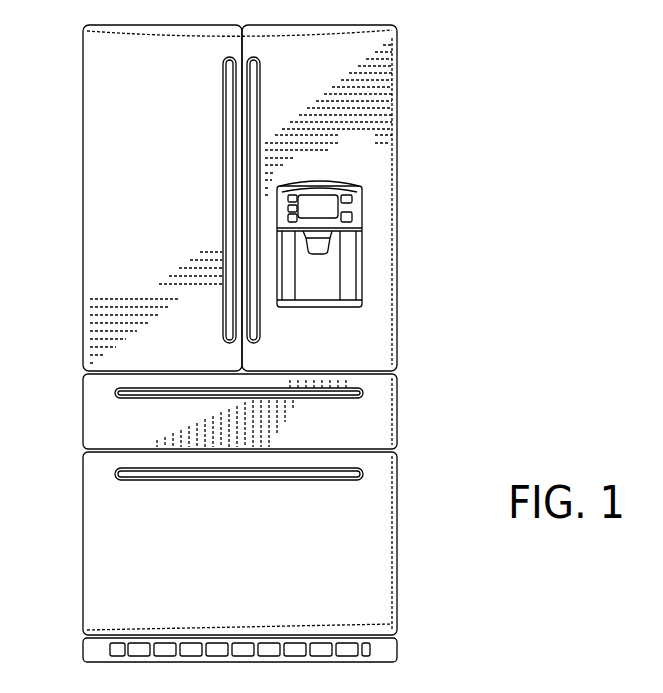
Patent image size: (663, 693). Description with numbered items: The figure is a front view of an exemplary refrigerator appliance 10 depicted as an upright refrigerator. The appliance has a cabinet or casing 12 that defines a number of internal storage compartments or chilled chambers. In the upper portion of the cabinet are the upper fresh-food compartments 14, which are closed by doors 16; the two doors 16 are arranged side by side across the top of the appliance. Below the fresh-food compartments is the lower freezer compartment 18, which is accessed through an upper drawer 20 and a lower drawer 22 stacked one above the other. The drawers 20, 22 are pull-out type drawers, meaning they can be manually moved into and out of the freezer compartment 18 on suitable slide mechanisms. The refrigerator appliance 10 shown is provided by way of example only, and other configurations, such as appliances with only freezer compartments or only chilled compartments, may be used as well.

The refrigerator appliance 10 is at (456, 112).
The cabinet or casing 12 is at (399, 283).
The upper fresh-food compartments 14 is at (110, 170).
The doors 16 is at (148, 255).
The lower freezer compartment 18 is at (370, 418).
The upper drawer 20 is at (138, 440).
The lower drawer 22 is at (259, 563).